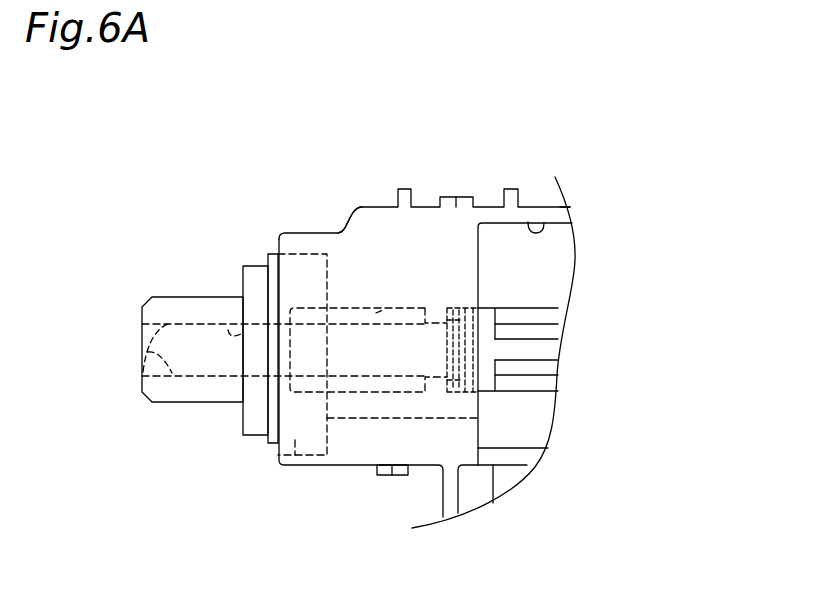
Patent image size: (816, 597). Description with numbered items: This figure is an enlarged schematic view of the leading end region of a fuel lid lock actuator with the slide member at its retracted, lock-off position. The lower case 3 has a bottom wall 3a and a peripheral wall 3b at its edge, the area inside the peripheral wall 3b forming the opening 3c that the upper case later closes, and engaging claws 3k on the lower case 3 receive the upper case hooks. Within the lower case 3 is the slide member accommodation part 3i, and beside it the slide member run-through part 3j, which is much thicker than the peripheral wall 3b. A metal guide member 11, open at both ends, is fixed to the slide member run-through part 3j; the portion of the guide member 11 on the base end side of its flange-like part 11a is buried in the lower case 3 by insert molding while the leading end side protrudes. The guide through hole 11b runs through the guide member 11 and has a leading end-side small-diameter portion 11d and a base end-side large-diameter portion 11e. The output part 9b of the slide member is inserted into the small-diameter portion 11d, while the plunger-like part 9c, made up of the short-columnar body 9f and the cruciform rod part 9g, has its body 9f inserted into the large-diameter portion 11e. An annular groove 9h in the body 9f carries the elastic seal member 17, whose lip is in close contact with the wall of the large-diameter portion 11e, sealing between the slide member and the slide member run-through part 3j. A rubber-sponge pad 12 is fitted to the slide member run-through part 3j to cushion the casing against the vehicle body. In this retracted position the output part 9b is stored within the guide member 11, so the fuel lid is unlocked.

The lower case 3 is at (372, 205).
The bottom wall 3a is at (562, 250).
The peripheral wall 3b is at (557, 212).
The opening 3c is at (528, 222).
The slide member accommodation part 3i is at (553, 275).
The slide member run-through part 3j is at (320, 242).
The engaging claws 3k is at (386, 477).
The output part 9b is at (202, 340).
The plunger-like part 9c is at (655, 372).
The body 9f is at (440, 395).
The rod part 9g is at (550, 352).
The annular groove 9h is at (454, 350).
The guide member 11 is at (262, 445).
The flange-like part 11a is at (303, 438).
The guide through hole 11b is at (143, 372).
The small-diameter portion 11d is at (228, 330).
The large-diameter portion 11e is at (376, 313).
The pad 12 is at (244, 425).
The seal member 17 is at (467, 390).